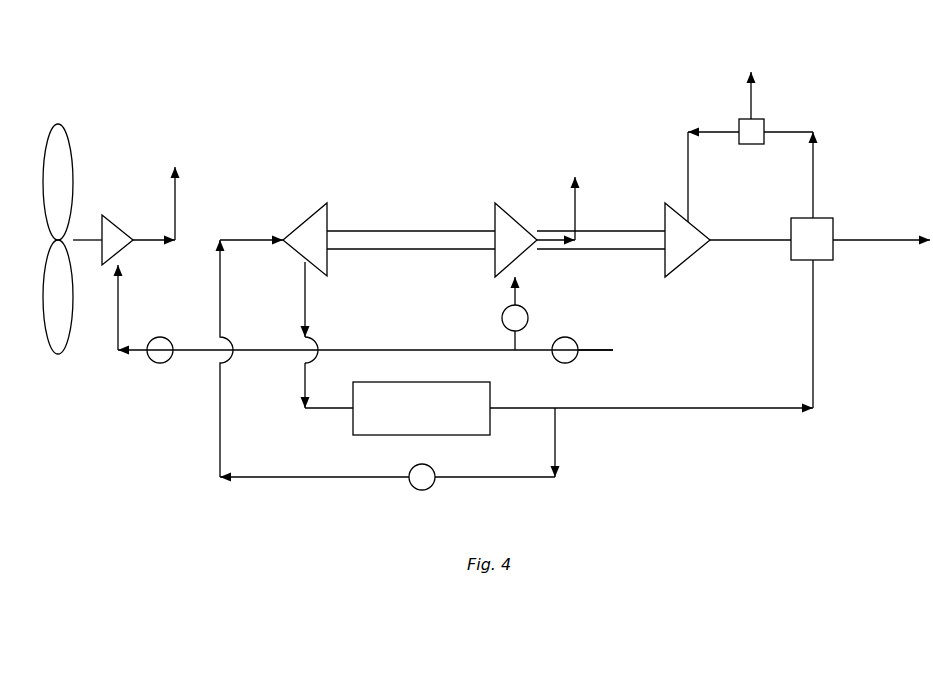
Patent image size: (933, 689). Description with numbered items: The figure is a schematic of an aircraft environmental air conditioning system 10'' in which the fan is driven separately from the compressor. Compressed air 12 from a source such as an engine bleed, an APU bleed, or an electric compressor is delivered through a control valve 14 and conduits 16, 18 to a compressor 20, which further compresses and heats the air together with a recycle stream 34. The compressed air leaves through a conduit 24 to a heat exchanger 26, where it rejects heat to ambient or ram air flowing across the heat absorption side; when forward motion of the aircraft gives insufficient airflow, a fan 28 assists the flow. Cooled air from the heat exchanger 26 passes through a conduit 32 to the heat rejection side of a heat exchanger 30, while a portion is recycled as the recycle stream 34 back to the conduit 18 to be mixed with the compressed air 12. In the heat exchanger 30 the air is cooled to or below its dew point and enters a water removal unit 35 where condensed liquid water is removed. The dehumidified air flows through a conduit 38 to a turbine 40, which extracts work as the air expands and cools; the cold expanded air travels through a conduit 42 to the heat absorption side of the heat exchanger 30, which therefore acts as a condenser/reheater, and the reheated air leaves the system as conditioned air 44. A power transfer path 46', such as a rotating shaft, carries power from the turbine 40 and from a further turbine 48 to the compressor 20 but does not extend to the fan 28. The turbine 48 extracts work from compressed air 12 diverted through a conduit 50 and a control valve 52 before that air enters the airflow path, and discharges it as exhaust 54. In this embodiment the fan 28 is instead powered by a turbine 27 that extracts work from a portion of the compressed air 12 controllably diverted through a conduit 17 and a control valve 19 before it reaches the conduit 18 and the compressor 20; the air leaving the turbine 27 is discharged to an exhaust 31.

The system 10'' is at (893, 56).
The compressed air 12 is at (597, 350).
The control valve 14 is at (571, 340).
The conduit 16 is at (370, 350).
The conduit 17 is at (190, 352).
The conduit 18 is at (220, 308).
The control valve 19 is at (165, 337).
The compressor 20 is at (302, 220).
The conduit 24 is at (305, 310).
The heat exchanger 26 is at (414, 382).
The turbine 27 is at (111, 222).
The fan 28 is at (72, 147).
The heat exchanger 30 is at (823, 218).
The exhaust 31 is at (175, 200).
The conduit 32 is at (704, 409).
The recycle stream 34 is at (490, 478).
The water removal unit 35 is at (750, 144).
The conduit 38 is at (687, 178).
The turbine 40 is at (690, 258).
The conduit 42 is at (744, 239).
The conditioned air 44 is at (865, 239).
The power transfer path 46' is at (496, 224).
The turbine 48 is at (512, 218).
The conduit 50 is at (514, 341).
The control valve 52 is at (523, 312).
The exhaust 54 is at (575, 213).